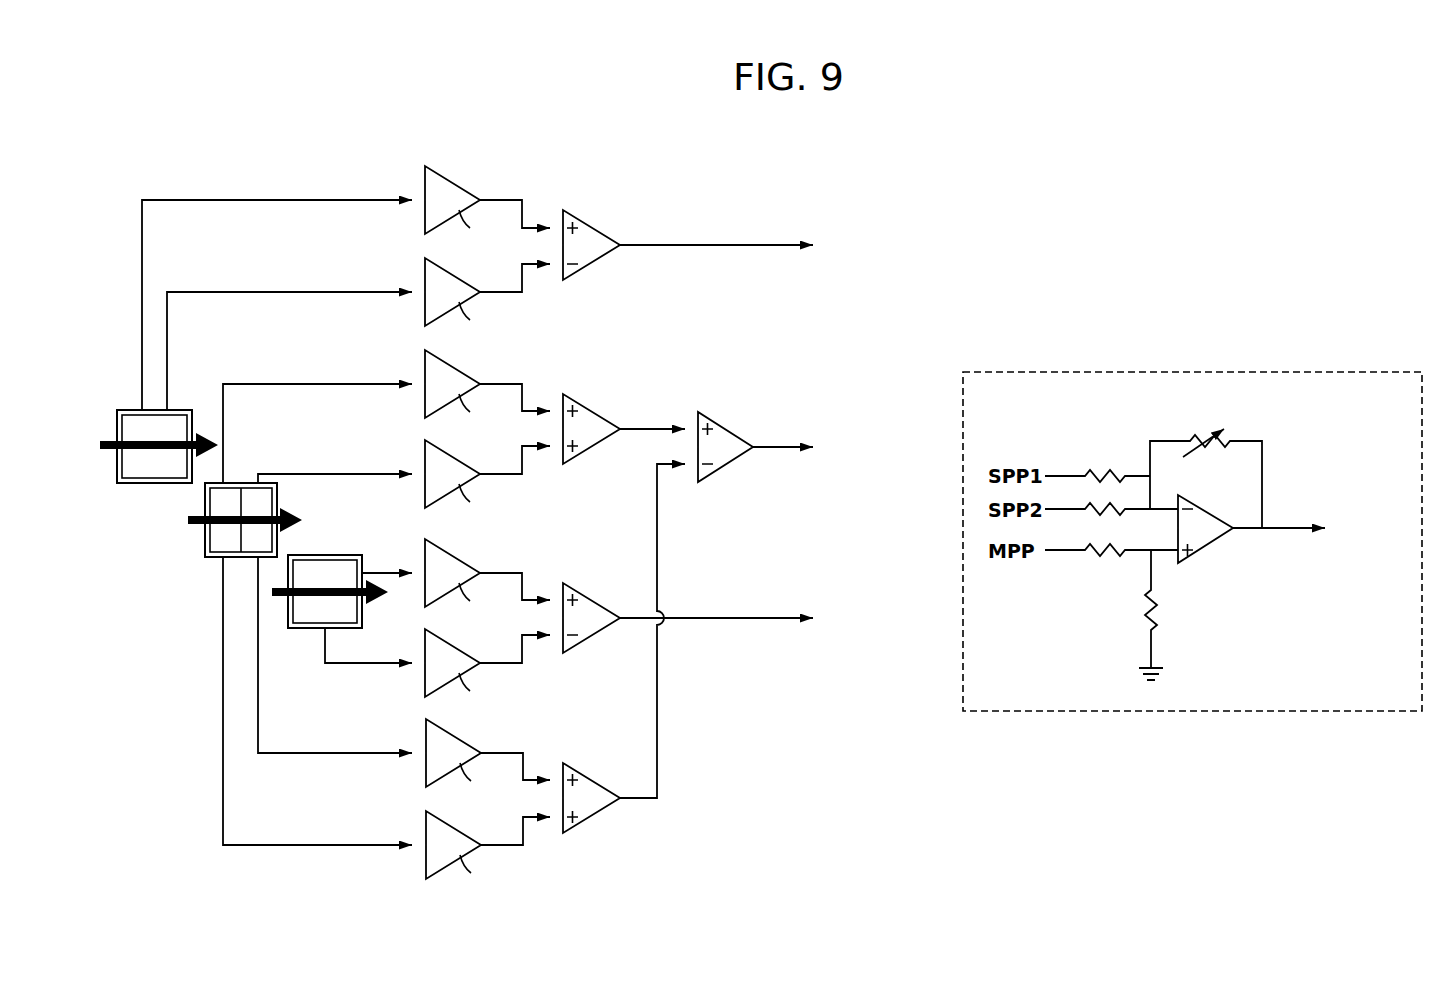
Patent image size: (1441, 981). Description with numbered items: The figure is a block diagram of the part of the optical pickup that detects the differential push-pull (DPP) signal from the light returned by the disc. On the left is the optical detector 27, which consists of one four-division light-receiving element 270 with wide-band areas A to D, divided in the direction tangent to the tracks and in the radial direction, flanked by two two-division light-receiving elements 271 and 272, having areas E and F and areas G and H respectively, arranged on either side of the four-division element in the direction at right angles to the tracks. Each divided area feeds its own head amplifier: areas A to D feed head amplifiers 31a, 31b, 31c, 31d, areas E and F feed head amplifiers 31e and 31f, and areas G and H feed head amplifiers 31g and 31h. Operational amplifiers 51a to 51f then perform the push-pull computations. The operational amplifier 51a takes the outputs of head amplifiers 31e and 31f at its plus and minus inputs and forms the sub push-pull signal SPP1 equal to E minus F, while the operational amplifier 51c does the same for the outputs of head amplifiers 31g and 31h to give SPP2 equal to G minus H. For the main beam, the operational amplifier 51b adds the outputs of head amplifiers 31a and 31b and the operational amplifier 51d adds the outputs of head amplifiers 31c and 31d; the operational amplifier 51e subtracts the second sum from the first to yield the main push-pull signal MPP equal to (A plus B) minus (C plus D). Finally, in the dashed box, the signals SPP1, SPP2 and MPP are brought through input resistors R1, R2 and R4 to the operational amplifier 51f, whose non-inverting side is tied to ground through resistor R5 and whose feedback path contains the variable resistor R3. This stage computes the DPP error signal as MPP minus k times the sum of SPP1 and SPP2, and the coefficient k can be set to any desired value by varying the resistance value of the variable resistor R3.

The optical detector 27 is at (193, 557).
The two-division light-receiving element 271 is at (177, 400).
The four-division light-receiving element 270 is at (280, 503).
The two-division light-receiving element 272 is at (343, 555).
The head amplifier 31a is at (487, 398).
The head amplifier 31b is at (487, 487).
The head amplifier 31c is at (488, 766).
The head amplifier 31d is at (488, 859).
The head amplifier 31e is at (487, 214).
The head amplifier 31f is at (487, 306).
The head amplifier 31g is at (487, 587).
The head amplifier 31h is at (487, 676).
The operational amplifier 51a is at (600, 231).
The operational amplifier 51b is at (588, 417).
The operational amplifier 51c is at (595, 603).
The operational amplifier 51d is at (600, 790).
The operational amplifier 51e is at (727, 432).
The operational amplifier 51f is at (1208, 518).
The resistor R1 is at (1097, 463).
The resistor R2 is at (1111, 522).
The variable resistor R3 is at (1206, 467).
The resistor R4 is at (1111, 564).
The resistor R5 is at (1167, 615).